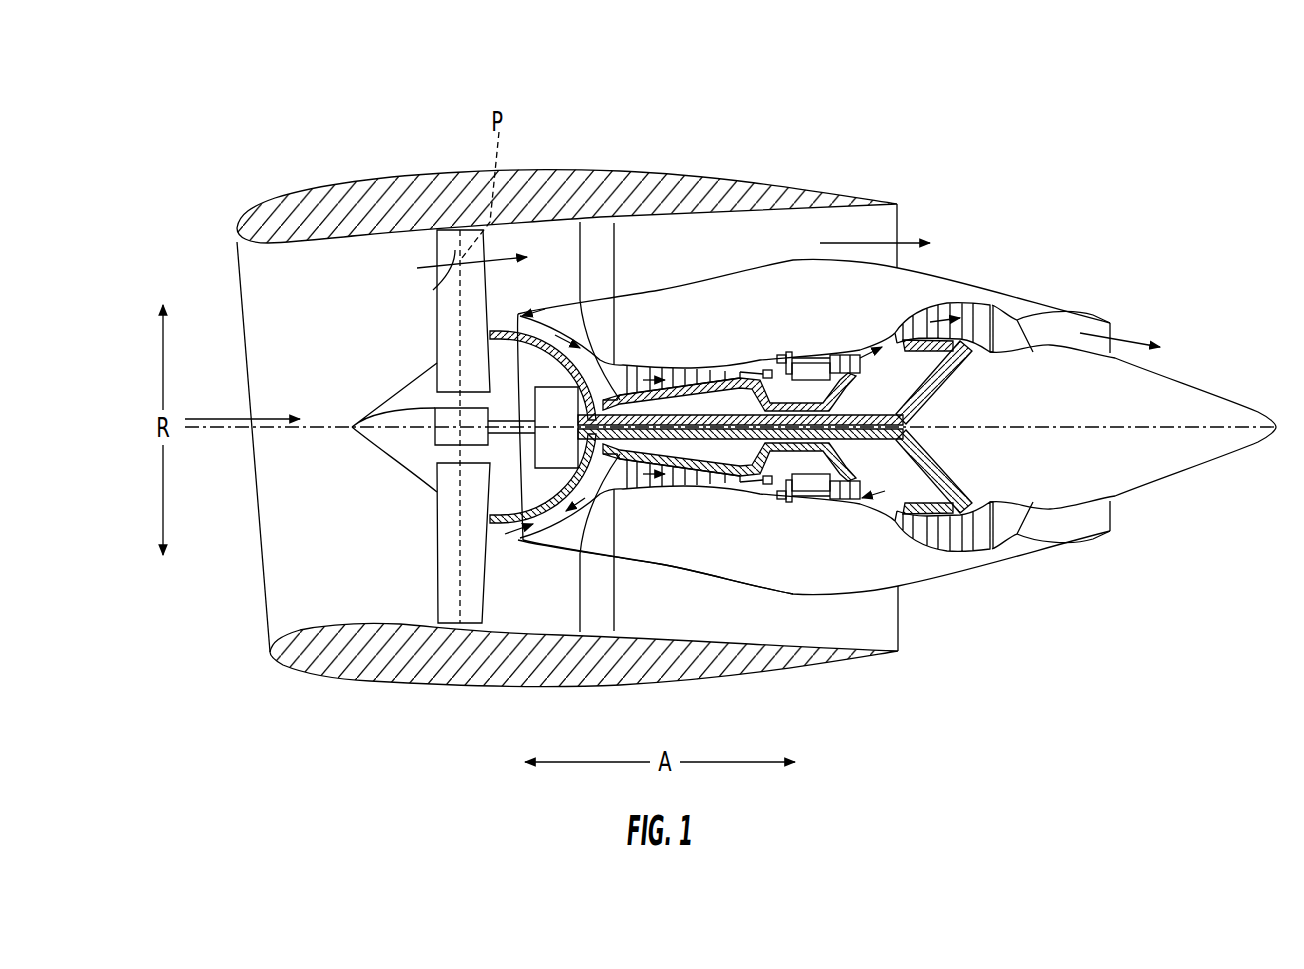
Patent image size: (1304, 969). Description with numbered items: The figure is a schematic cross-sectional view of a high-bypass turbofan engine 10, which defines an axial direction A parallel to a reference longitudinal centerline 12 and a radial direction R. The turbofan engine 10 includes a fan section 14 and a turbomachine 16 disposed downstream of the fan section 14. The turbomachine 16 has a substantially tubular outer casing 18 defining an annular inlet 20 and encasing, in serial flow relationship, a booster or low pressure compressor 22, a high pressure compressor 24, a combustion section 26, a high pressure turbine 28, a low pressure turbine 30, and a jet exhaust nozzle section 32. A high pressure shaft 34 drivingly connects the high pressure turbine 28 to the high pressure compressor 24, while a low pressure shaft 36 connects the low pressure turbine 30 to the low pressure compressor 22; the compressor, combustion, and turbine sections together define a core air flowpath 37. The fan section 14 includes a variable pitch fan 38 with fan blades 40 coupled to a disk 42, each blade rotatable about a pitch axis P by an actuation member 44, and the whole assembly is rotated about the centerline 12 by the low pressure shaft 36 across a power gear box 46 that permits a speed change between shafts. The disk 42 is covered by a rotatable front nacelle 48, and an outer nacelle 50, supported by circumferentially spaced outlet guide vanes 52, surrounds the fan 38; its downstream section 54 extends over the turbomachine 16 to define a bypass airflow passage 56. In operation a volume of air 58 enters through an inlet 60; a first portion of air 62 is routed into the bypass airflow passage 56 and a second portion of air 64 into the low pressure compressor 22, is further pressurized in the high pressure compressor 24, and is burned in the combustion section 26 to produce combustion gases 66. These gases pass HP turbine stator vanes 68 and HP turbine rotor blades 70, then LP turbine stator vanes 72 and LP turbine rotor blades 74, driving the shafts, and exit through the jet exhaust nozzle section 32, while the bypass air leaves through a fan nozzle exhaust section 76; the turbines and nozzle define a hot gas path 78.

The turbofan engine 10 is at (1036, 184).
The longitudinal centerline 12 is at (1055, 427).
The fan section 14 is at (430, 113).
The turbomachine 16 is at (736, 334).
The outer casing 18 is at (760, 583).
The annular inlet 20 is at (527, 537).
The low pressure compressor 22 is at (567, 486).
The high pressure compressor 24 is at (657, 490).
The combustion section 26 is at (800, 497).
The high pressure turbine 28 is at (943, 480).
The low pressure turbine 30 is at (977, 555).
The jet exhaust nozzle section 32 is at (1040, 520).
The high pressure shaft 34 is at (807, 404).
The low pressure shaft 36 is at (917, 410).
The core air flowpath 37 is at (602, 503).
The variable pitch fan 38 is at (383, 464).
The fan blades 40 is at (437, 567).
The disk 42 is at (450, 383).
The actuation member 44 is at (400, 408).
The power gear box 46 is at (547, 423).
The front nacelle 48 is at (357, 437).
The outer nacelle 50 is at (480, 685).
The outlet guide vanes 52 is at (620, 248).
The downstream section 54 is at (863, 240).
The bypass airflow passage 56 is at (843, 240).
The volume of air 58 is at (222, 419).
The inlet 60 is at (266, 627).
The first portion of air 62 is at (440, 283).
The second portion of air 64 is at (514, 320).
The combustion gases 66 is at (940, 308).
The HP turbine stator vanes 68 is at (818, 498).
The HP turbine rotor blades 70 is at (903, 458).
The LP turbine stator vanes 72 is at (903, 530).
The LP turbine rotor blades 74 is at (917, 540).
The fan nozzle exhaust section 76 is at (898, 226).
The hot gas path 78 is at (880, 333).